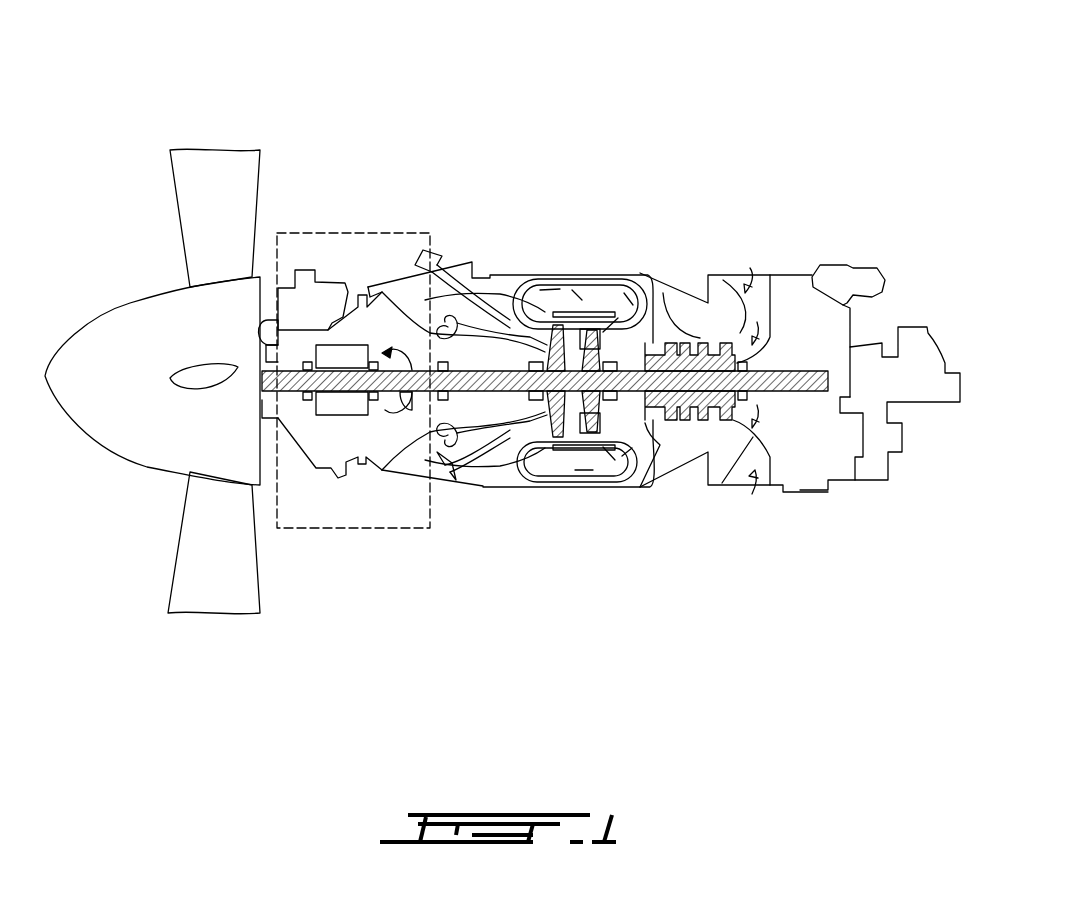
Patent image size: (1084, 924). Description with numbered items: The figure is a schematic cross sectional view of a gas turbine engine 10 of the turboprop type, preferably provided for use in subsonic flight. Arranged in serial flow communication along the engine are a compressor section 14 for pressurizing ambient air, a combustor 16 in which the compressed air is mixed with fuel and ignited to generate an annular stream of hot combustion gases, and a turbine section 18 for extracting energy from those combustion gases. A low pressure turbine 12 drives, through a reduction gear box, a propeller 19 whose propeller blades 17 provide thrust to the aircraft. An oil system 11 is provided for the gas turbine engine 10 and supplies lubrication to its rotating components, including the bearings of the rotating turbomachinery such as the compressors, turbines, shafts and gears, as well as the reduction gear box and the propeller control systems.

The gas turbine engine 10 is at (748, 152).
The oil system 11 is at (372, 233).
The low pressure turbine 12 is at (555, 320).
The compressor section 14 is at (686, 330).
The combustor 16 is at (585, 278).
The propeller blades 17 is at (238, 173).
The turbine section 18 is at (570, 440).
The propeller 19 is at (122, 413).